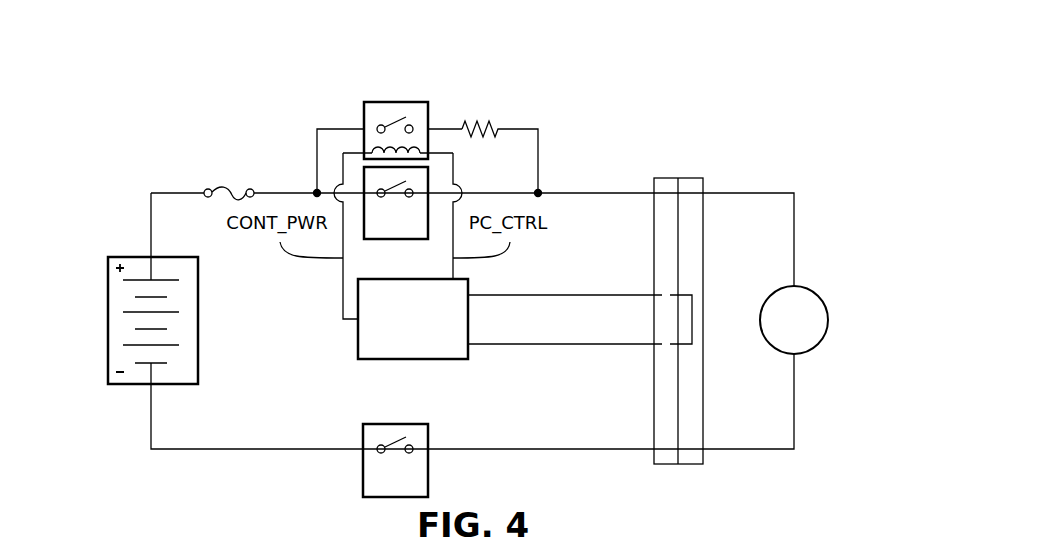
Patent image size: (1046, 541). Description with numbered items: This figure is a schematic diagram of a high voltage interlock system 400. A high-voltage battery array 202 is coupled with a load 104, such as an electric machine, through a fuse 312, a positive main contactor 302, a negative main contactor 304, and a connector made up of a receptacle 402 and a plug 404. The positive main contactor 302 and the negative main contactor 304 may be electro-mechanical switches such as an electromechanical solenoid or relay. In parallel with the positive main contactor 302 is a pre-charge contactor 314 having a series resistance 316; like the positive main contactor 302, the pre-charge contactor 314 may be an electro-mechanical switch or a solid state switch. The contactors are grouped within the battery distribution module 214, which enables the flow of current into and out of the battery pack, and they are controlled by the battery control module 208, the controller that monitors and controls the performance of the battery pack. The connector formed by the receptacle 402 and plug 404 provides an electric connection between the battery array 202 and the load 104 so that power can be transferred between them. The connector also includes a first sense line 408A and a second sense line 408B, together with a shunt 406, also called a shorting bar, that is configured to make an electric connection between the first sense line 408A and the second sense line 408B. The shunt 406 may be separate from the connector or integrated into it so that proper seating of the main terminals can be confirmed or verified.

The load 104 is at (819, 296).
The high-voltage battery array 202 is at (130, 257).
The battery control module 208 is at (413, 360).
The battery distribution module 214 is at (542, 56).
The positive main contactor 302 is at (378, 240).
The negative main contactor 304 is at (363, 436).
The fuse 312 is at (218, 188).
The pre-charge contactor 314 is at (408, 102).
The series resistance 316 is at (484, 121).
The high voltage interlock system 400 is at (648, 98).
The receptacle 402 is at (666, 178).
The plug 404 is at (690, 178).
The shunt 406 is at (692, 320).
The first sense line 408A is at (642, 344).
The second sense line 408B is at (642, 295).